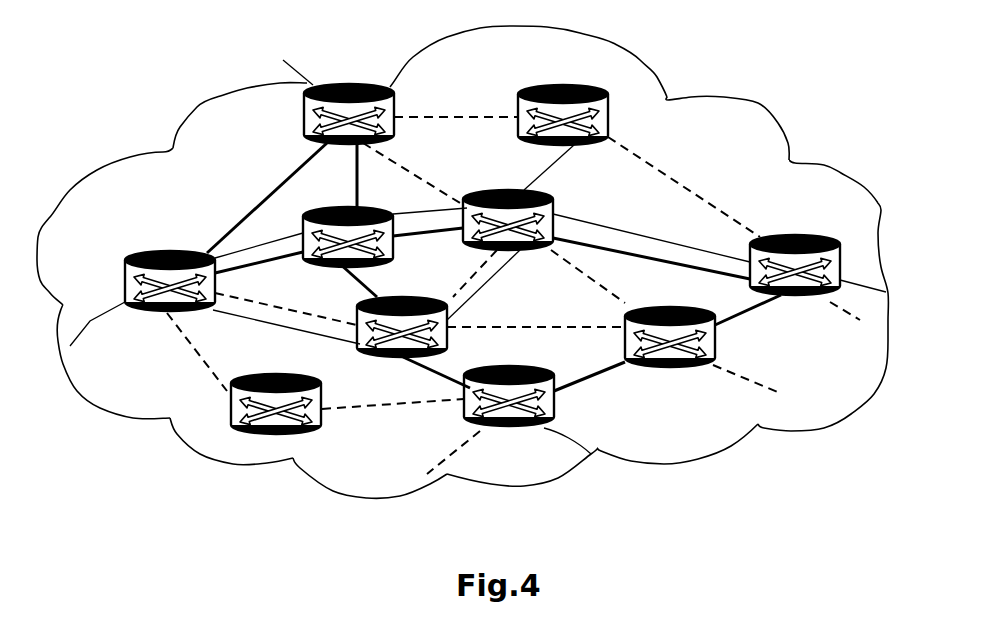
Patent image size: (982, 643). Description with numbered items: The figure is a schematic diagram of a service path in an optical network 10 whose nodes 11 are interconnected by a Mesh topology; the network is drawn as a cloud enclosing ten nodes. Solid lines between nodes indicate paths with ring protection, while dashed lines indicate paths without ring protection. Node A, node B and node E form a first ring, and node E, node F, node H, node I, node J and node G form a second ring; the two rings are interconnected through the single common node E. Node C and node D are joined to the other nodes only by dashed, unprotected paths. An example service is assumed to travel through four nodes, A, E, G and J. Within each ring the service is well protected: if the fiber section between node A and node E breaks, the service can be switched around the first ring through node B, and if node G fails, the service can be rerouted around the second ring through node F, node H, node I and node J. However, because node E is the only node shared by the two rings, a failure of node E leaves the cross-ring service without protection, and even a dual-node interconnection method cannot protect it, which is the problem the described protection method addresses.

The optical network 10 is at (753, 125).
The node 11 is at (598, 448).
The node A is at (162, 265).
The node B is at (328, 114).
The node C is at (256, 404).
The node D is at (552, 106).
The node E is at (334, 237).
The node F is at (391, 325).
The node G is at (508, 205).
The node H is at (509, 416).
The node I is at (670, 323).
The node J is at (795, 252).